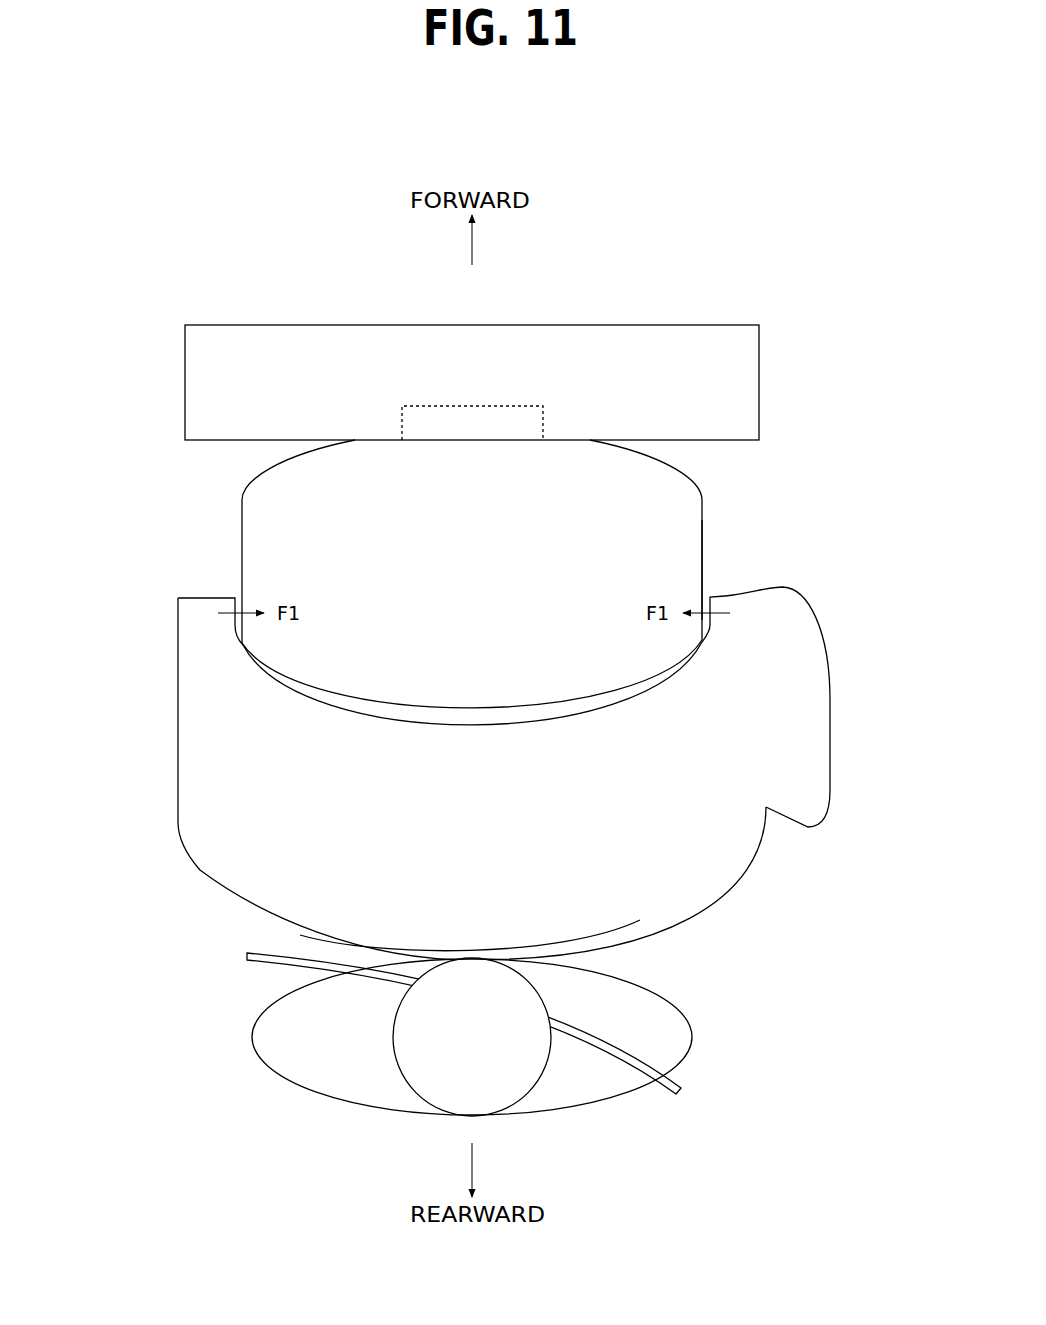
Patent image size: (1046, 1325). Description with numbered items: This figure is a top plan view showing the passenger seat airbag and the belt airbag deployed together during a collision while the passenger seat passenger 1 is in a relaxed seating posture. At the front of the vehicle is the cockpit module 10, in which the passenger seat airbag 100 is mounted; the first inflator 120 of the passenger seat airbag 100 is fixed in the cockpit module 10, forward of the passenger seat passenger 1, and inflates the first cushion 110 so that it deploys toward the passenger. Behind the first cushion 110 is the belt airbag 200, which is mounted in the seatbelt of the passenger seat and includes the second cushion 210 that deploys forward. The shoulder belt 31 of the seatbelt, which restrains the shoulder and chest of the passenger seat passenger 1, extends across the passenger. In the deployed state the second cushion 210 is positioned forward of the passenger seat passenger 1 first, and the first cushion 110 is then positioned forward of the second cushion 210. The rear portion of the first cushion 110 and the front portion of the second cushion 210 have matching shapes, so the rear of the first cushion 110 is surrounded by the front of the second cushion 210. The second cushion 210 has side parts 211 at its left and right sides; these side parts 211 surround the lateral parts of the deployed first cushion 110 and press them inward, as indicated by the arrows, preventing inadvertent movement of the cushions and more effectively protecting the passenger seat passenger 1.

The cockpit module 10 is at (279, 345).
The first inflator 120 is at (527, 428).
The passenger seat airbag 100 is at (238, 540).
The first cushion 110 is at (665, 538).
The belt airbag 200 is at (186, 861).
The second cushion 210 is at (447, 850).
The side parts 211 is at (197, 623).
The shoulder belt 31 is at (613, 1038).
The passenger seat passenger 1 is at (348, 1073).